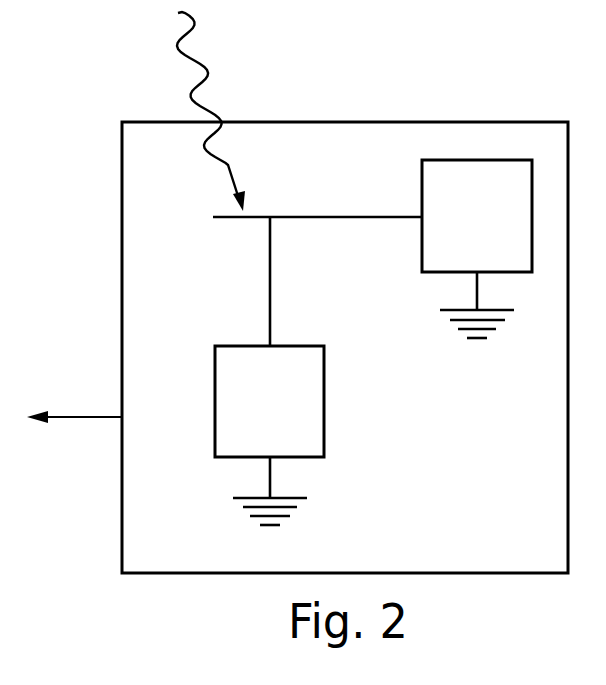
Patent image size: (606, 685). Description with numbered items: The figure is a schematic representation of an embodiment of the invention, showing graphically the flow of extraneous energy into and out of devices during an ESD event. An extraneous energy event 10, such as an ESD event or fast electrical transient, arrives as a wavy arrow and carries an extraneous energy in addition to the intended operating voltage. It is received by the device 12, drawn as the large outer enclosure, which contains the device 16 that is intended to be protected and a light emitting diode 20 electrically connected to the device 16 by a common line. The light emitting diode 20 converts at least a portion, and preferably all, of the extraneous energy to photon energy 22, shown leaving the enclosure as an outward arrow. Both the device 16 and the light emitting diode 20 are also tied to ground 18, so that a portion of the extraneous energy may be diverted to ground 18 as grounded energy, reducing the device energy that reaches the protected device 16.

The extraneous energy event 10 is at (192, 108).
The device 12 is at (422, 122).
The device 16 is at (422, 240).
The ground 18 is at (447, 310).
The light emitting diode 20 is at (324, 427).
The photon energy 22 is at (77, 417).